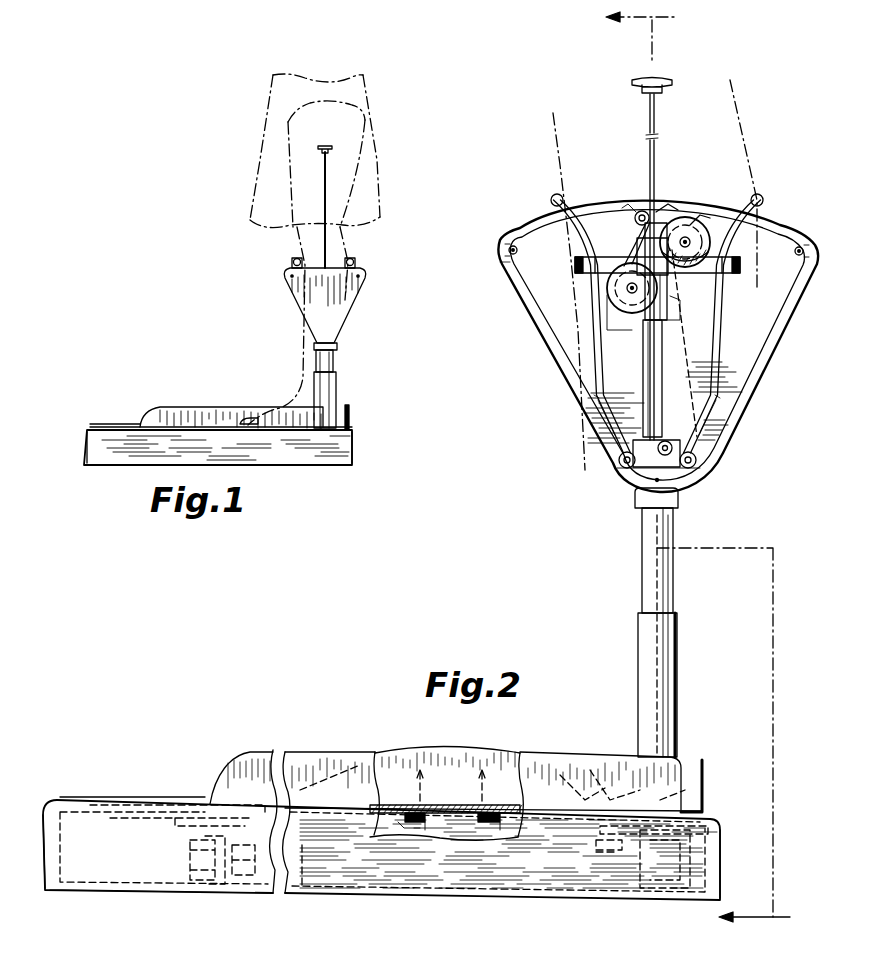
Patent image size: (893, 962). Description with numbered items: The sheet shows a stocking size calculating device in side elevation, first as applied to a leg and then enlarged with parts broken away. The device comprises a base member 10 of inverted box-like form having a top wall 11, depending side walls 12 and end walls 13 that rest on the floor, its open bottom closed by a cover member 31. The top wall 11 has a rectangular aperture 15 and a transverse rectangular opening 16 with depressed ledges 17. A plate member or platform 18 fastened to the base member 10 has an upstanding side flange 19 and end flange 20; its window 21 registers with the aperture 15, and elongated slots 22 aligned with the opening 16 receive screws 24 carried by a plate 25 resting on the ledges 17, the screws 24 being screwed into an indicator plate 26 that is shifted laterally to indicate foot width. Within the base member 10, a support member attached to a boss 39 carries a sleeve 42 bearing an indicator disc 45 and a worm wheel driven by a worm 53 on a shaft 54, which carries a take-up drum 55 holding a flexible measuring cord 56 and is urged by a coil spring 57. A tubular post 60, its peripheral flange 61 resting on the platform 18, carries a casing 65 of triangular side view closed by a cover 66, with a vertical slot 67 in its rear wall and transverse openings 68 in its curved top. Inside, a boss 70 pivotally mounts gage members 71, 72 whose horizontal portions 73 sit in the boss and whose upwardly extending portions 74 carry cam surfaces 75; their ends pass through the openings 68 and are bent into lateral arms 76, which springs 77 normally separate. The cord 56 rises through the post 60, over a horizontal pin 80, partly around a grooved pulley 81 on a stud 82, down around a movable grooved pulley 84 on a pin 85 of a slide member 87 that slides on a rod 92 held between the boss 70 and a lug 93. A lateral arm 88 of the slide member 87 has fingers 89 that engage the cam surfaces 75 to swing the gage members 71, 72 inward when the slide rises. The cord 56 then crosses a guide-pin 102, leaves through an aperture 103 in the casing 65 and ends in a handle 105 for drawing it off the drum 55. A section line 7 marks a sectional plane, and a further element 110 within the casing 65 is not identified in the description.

In FIG. 2, the section line 7- 7 is at (707, 469).
In FIG. 1, the base member 10 is at (356, 447).
In FIG. 2, the base member 10 is at (712, 850).
In FIG. 1, the top wall 11 is at (148, 427).
In FIG. 2, the top wall 11 is at (456, 799).
In FIG. 1, the side walls 12 is at (281, 467).
In FIG. 2, the side walls 12 is at (660, 872).
In FIG. 1, the end walls 13 is at (86, 453).
In FIG. 2, the end walls 13 is at (46, 808).
In FIG. 2, the rectangular aperture 15 is at (148, 820).
In FIG. 2, the rectangular opening 16 is at (412, 824).
In FIG. 2, the depressed ledges 17 is at (427, 826).
In FIG. 1, the plate member 18 is at (125, 427).
In FIG. 2, the plate member 18 is at (372, 800).
In FIG. 1, the side flange 19 is at (233, 428).
In FIG. 2, the side flange 19 is at (580, 780).
In FIG. 1, the end flange 20 is at (351, 418).
In FIG. 2, the end flange 20 is at (706, 776).
In FIG. 2, the window 21 is at (108, 797).
In FIG. 2, the elongated slots 22 is at (428, 808).
In FIG. 2, the screws 24 is at (417, 778).
In FIG. 2, the plate 25 is at (462, 815).
In FIG. 2, the indicator plate 26 is at (496, 762).
In FIG. 2, the cover member 31 is at (106, 892).
In FIG. 2, the boss 39 is at (618, 870).
In FIG. 2, the sleeve 42 is at (215, 884).
In FIG. 2, the indicator disc 45 is at (128, 804).
In FIG. 2, the worm 53 is at (195, 880).
In FIG. 2, the shaft 54 is at (304, 886).
In FIG. 2, the take-up reel or drum 55 is at (712, 826).
In FIG. 1, the flexible measuring member 56 is at (325, 186).
In FIG. 2, the flexible measuring member 56 is at (688, 312).
In FIG. 2, the coil spring 57 is at (244, 876).
In FIG. 1, the tubular post 60 is at (337, 386).
In FIG. 2, the tubular post 60 is at (642, 658).
In FIG. 2, the peripheral flange 61 is at (682, 800).
In FIG. 1, the casing 65 is at (288, 310).
In FIG. 2, the casing 65 is at (536, 357).
In FIG. 1, the cover 66 is at (350, 307).
In FIG. 2, the vertical slot 67 is at (660, 332).
In FIG. 2, the transverse openings 68 is at (584, 228).
In FIG. 2, the boss 70 is at (632, 494).
In FIG. 2, the gage member 71 is at (588, 402).
In FIG. 2, the gage member 72 is at (726, 407).
In FIG. 2, the horizontal portions 73 is at (634, 470).
In FIG. 2, the upwardly extending portions 74 is at (600, 412).
In FIG. 2, the cam surfaces 75 is at (592, 340).
In FIG. 1, the lateral arms 76 is at (292, 260).
In FIG. 2, the lateral arms 76 is at (554, 195).
In FIG. 2, the springs 77 is at (620, 466).
In FIG. 2, the horizontal pin 80 is at (672, 446).
In FIG. 2, the grooved pulley 81 is at (702, 212).
In FIG. 2, the stud 82 is at (704, 230).
In FIG. 2, the grooved pulley 84 is at (610, 302).
In FIG. 2, the pin 85 is at (627, 289).
In FIG. 2, the slide member 87 is at (647, 332).
In FIG. 2, the lateral arm 88 is at (638, 262).
In FIG. 2, the fingers 89 is at (575, 264).
In FIG. 2, the rod 92 is at (645, 361).
In FIG. 2, the lug 93 is at (634, 210).
In FIG. 2, the guide-pin 102 is at (642, 210).
In FIG. 2, the aperture 103 is at (668, 204).
In FIG. 1, the handle 105 is at (328, 146).
In FIG. 2, the handle 105 is at (664, 79).
In FIG. 2, the drive belt 110 is at (660, 270).